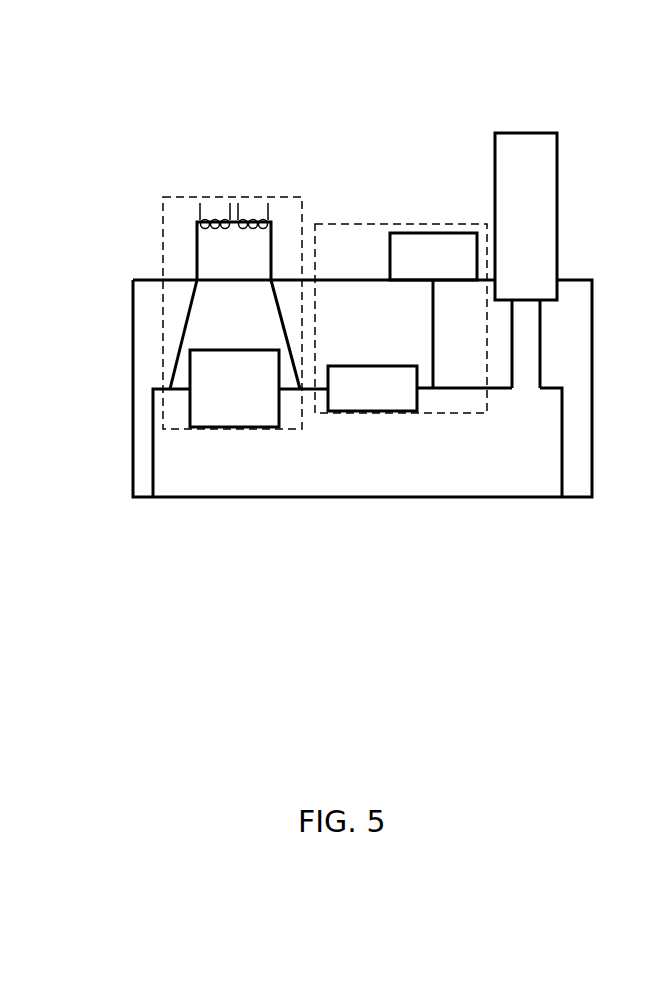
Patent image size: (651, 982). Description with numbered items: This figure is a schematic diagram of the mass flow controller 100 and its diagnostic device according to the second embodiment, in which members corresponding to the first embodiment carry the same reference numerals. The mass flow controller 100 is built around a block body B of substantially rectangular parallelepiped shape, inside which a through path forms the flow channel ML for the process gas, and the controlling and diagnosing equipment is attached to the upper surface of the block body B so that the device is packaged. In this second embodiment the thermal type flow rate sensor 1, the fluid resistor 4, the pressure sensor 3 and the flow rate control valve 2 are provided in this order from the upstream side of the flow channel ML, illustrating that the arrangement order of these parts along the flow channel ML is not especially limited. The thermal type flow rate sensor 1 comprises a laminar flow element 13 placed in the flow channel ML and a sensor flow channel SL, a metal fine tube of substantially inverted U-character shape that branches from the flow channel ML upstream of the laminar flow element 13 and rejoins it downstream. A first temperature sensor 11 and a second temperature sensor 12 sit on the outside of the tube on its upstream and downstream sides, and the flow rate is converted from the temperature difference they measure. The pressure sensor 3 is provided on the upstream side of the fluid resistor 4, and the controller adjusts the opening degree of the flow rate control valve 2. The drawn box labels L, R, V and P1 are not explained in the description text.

The mass flow controller 100 is at (145, 172).
The thermal type flow rate sensor 1 is at (180, 197).
The first temperature sensor 11 is at (213, 213).
The second temperature sensor 12 is at (250, 213).
The laminar flow element 13 is at (235, 350).
The flow rate control valve 2 is at (531, 220).
The pressure sensor 3 is at (401, 283).
The fluid resistor 4 is at (369, 300).
The block body B is at (460, 497).
The light emitting element L is at (234, 388).
The resistor R is at (372, 388).
The voltage source V is at (526, 216).
The protection element P1 is at (433, 256).
The flow channel ML is at (153, 440).
The sensor flow channel SL is at (297, 380).